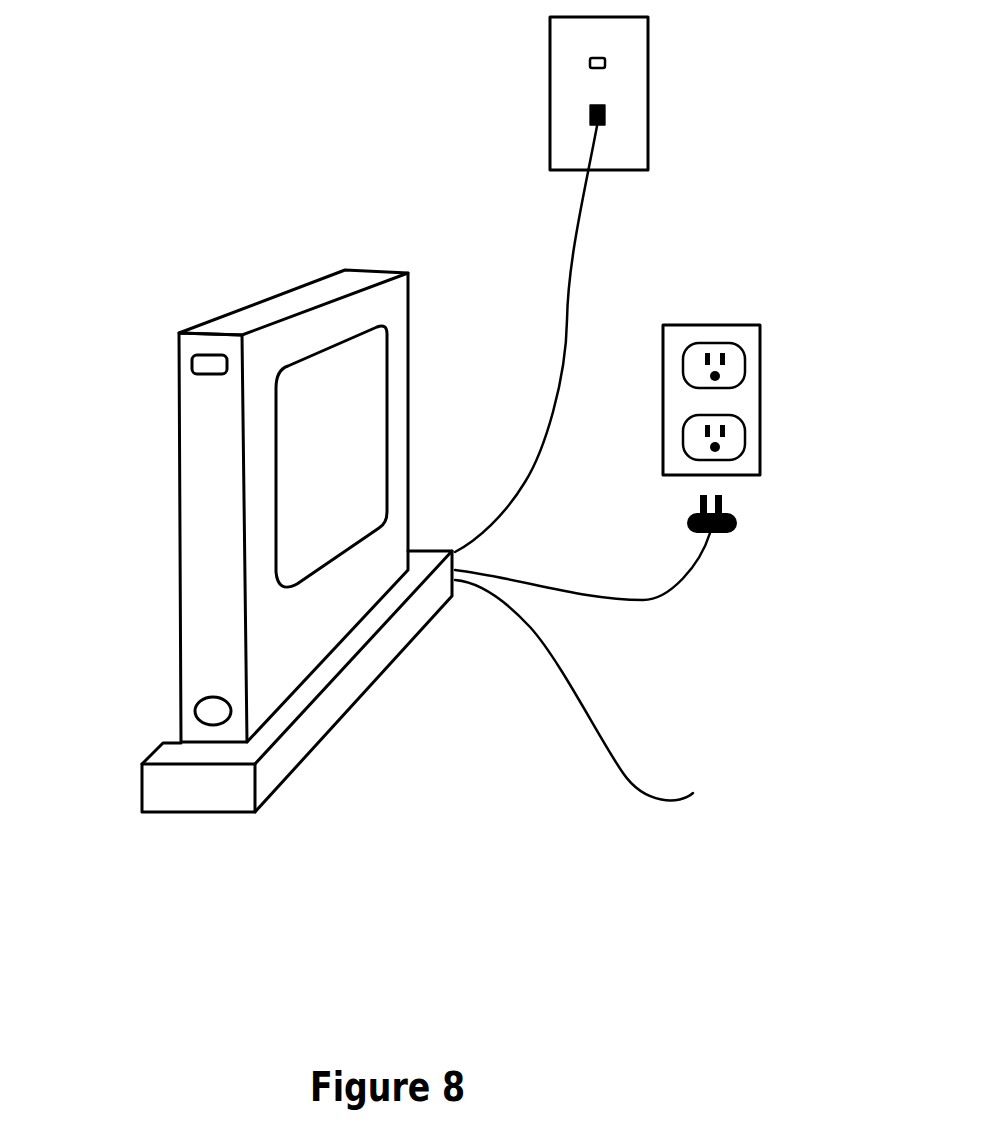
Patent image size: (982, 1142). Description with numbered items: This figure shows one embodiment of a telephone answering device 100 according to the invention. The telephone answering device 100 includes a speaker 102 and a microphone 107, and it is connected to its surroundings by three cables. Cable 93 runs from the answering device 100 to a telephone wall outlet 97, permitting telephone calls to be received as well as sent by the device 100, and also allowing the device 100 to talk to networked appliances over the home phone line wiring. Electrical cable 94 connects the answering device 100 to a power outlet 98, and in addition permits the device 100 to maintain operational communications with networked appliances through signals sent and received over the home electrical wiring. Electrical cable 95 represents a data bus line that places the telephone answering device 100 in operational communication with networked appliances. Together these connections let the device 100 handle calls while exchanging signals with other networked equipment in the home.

The cable 93 is at (567, 260).
The electrical cable 94 is at (612, 612).
The electrical cable 95 is at (573, 713).
The telephone wall outlet 97 is at (633, 65).
The power outlet 98 is at (748, 398).
The telephone answering device 100 is at (223, 803).
The speaker 102 is at (203, 708).
The microphone 107 is at (197, 363).